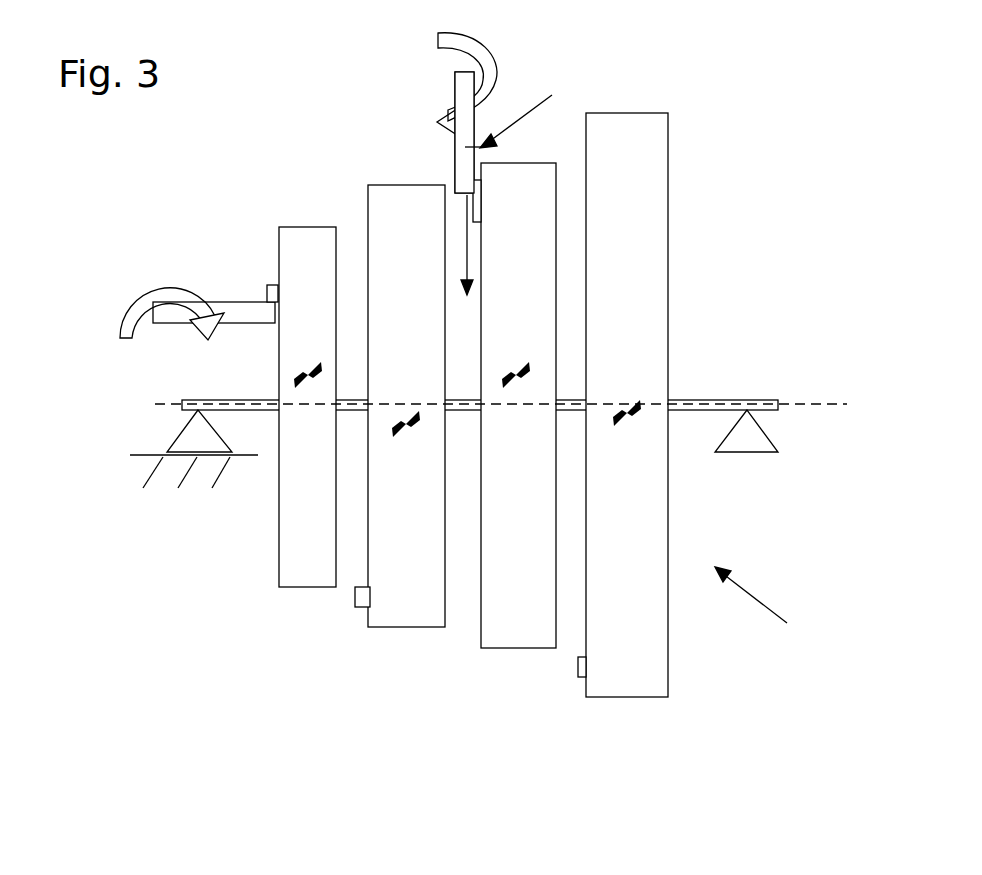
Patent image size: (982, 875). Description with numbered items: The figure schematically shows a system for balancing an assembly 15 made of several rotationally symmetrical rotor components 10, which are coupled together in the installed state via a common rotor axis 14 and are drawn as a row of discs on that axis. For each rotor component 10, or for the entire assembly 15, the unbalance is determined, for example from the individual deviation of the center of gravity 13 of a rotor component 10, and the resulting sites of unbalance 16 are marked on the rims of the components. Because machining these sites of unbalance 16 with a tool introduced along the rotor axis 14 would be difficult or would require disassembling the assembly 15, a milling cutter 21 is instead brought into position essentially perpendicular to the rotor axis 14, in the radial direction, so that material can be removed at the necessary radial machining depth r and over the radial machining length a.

The rotor component 10 is at (638, 238).
The center of gravity 13 is at (636, 399).
The rotor axis 14 is at (780, 405).
The assembly 15 is at (775, 616).
The site of unbalance 16 is at (475, 199).
The milling cutter 21 is at (462, 165).
The radial machining length a is at (465, 238).
The radial machining depth r is at (517, 105).